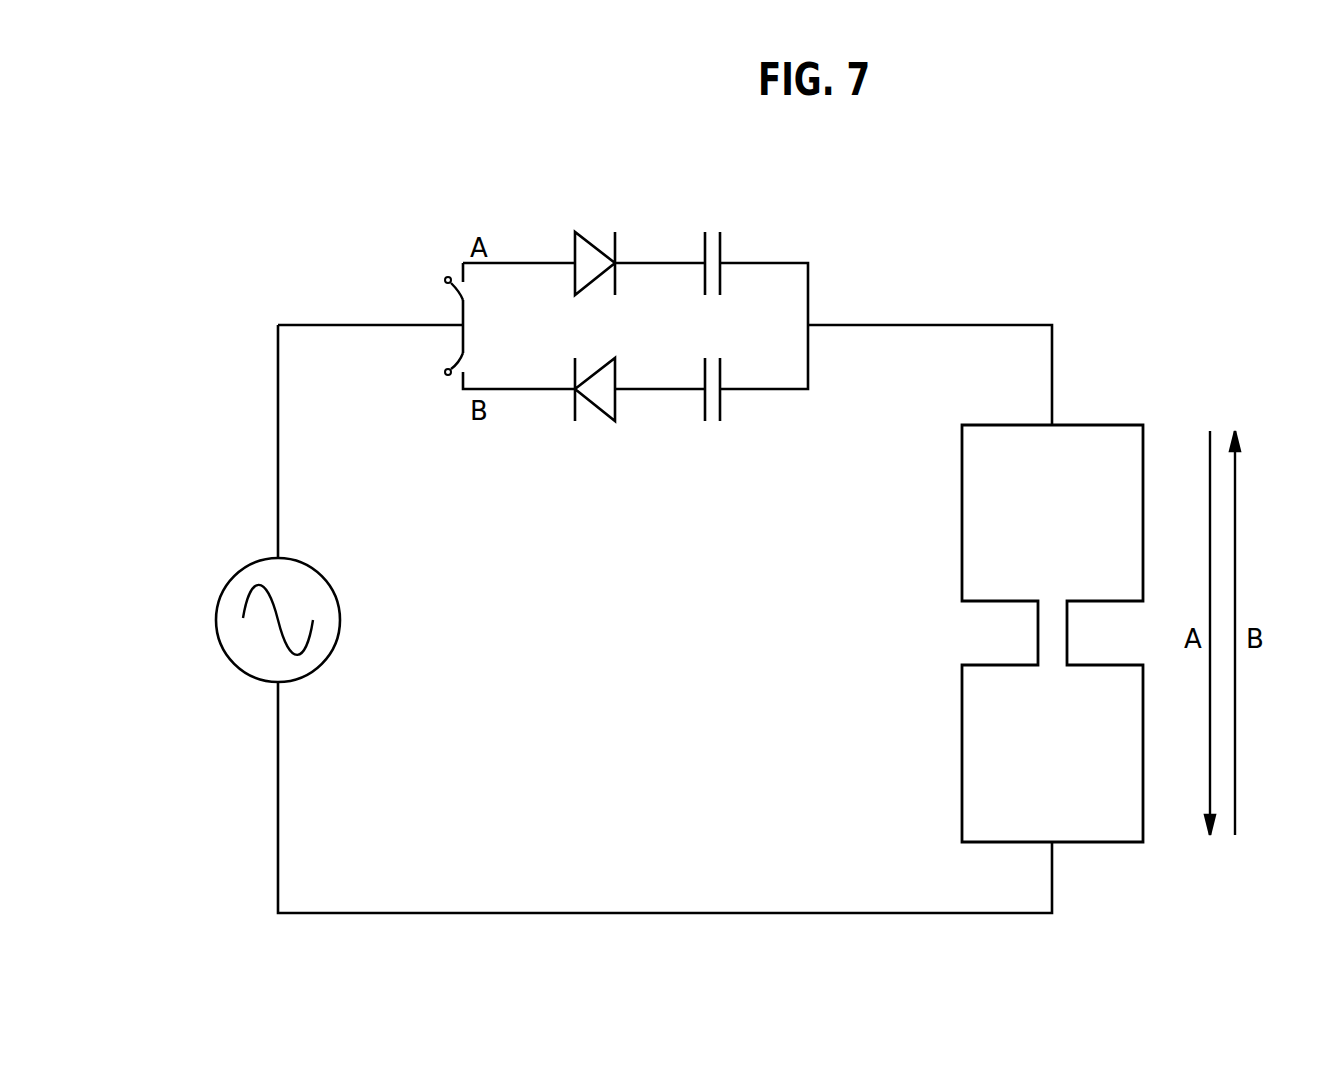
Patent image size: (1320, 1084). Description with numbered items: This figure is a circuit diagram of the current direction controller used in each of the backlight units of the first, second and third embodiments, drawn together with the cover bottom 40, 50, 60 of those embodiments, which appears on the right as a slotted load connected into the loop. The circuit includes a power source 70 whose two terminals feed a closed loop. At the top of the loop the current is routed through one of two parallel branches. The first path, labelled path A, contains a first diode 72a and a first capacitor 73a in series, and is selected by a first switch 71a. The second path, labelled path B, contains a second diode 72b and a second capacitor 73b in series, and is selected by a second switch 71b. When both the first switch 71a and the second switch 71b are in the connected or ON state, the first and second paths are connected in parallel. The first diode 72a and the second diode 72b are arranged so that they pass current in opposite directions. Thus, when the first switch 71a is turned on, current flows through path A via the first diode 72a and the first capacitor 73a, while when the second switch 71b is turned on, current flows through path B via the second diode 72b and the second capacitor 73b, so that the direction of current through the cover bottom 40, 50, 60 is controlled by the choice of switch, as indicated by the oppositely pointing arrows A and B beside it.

The power source 70 is at (226, 596).
The first switch 71a is at (455, 277).
The second switch 71b is at (455, 376).
The first diode 72a is at (598, 232).
The second diode 72b is at (598, 423).
The first capacitor 73a is at (727, 243).
The second capacitor 73b is at (727, 410).
The electrode / load element 40 is at (944, 633).
The electrode / load element 50 is at (944, 633).
The electrode / load element 60 is at (1052, 638).